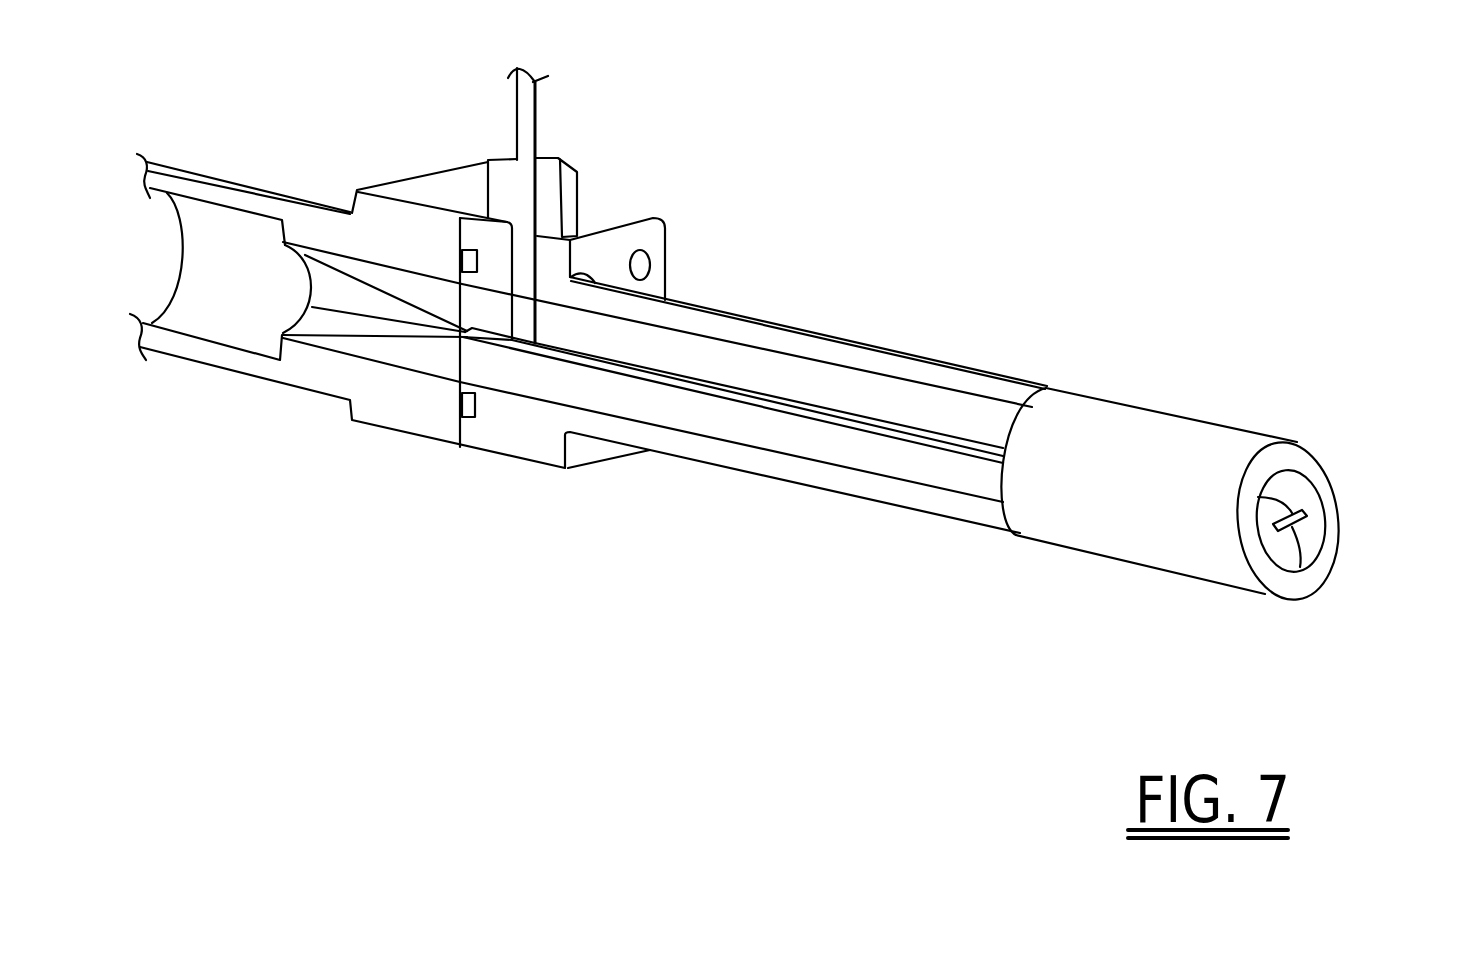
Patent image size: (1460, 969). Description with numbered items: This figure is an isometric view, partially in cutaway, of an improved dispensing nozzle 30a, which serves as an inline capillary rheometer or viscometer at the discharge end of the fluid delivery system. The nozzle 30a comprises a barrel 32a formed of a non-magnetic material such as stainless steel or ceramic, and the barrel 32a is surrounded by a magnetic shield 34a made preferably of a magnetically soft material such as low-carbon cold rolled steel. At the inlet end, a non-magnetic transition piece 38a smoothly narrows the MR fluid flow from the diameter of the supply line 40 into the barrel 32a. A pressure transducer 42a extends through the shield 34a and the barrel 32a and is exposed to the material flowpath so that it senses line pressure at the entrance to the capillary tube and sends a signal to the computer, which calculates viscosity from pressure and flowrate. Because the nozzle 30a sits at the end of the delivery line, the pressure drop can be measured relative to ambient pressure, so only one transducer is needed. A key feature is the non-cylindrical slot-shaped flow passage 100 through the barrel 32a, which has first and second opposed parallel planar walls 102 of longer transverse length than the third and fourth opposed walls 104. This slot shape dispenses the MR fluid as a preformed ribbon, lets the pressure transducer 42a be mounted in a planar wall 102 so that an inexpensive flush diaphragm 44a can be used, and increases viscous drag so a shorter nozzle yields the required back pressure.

The dispensing nozzle 30a is at (1107, 133).
The barrel 32a is at (1297, 488).
The magnetic shield 34a is at (932, 378).
The non-magnetic transition piece 38a is at (380, 347).
The supply line 40 is at (195, 320).
The pressure transducer 42a is at (520, 277).
The flush diaphragm 44a is at (522, 343).
The slot-shaped flow passage 100 is at (882, 422).
The first and second opposed parallel planar walls 102 is at (1258, 497).
The third and fourth opposed walls 104 is at (1275, 528).